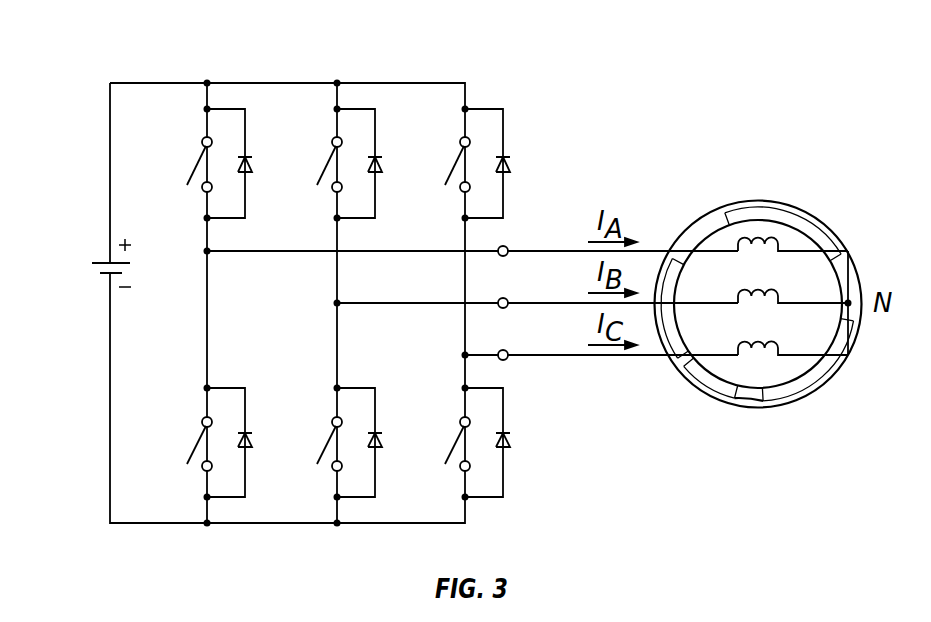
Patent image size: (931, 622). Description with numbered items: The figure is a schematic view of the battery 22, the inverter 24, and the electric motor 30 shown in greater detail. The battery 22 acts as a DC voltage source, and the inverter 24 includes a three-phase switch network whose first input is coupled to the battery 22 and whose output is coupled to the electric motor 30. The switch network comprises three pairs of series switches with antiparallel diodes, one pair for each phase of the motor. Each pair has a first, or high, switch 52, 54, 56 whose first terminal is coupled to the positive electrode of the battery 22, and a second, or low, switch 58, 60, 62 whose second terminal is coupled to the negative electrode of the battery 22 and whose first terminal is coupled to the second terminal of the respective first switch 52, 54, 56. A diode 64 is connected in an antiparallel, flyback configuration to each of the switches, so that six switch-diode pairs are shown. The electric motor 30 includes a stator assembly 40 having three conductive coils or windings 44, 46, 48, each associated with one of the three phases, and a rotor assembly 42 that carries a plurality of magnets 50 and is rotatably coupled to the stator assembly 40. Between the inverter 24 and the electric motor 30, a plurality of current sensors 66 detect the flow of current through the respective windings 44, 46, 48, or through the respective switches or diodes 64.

The battery 22 is at (107, 278).
The inverter 24 is at (553, 45).
The electric motor 30 is at (810, 148).
The stator assembly 40 is at (713, 207).
The rotor assembly 42 is at (730, 403).
The winding 44 is at (746, 254).
The winding 46 is at (746, 306).
The winding 48 is at (776, 343).
The magnets 50 is at (679, 364).
The first switch 52 is at (198, 162).
The first switch 54 is at (328, 162).
The first switch 56 is at (456, 162).
The second switch 58 is at (198, 441).
The second switch 60 is at (328, 441).
The second switch 62 is at (456, 441).
The diode 64 is at (250, 175).
The current sensor 66 is at (507, 247).